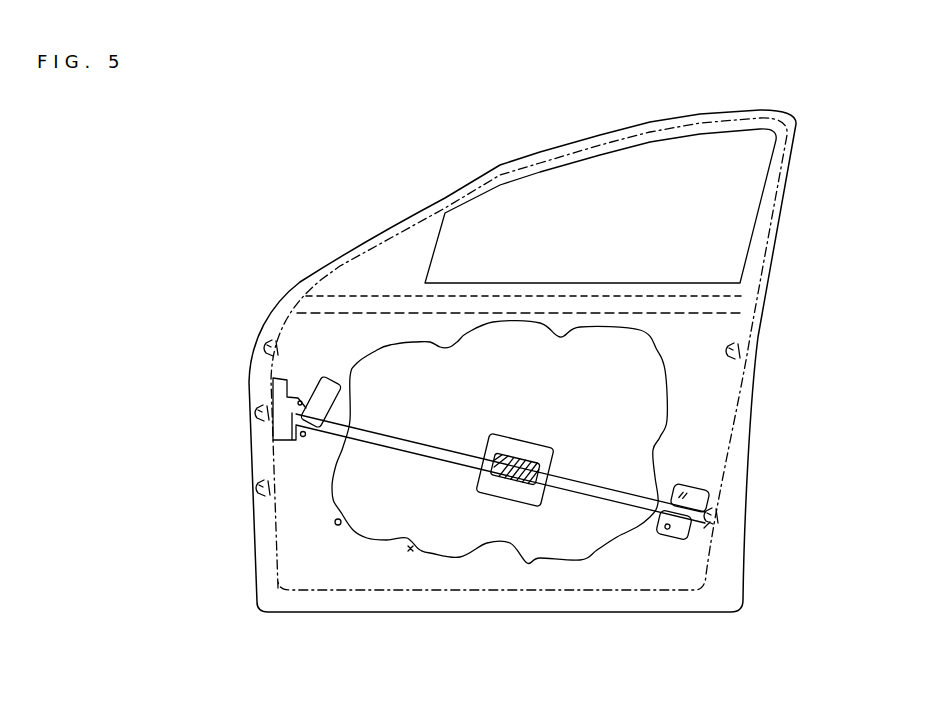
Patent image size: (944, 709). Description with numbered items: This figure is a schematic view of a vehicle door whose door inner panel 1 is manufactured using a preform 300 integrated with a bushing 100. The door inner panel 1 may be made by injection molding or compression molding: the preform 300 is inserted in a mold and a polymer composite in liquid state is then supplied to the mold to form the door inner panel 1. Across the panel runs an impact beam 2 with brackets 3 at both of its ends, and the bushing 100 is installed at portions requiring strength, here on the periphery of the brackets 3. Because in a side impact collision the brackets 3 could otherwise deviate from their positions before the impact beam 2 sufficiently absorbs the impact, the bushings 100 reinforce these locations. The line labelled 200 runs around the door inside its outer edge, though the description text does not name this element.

The door inner panel 1 is at (746, 578).
The impact beam 2 is at (575, 490).
The brackets 3 is at (273, 378).
The bushing 100 is at (266, 345).
The sealing line 200 is at (369, 252).
The preform 300 is at (318, 288).